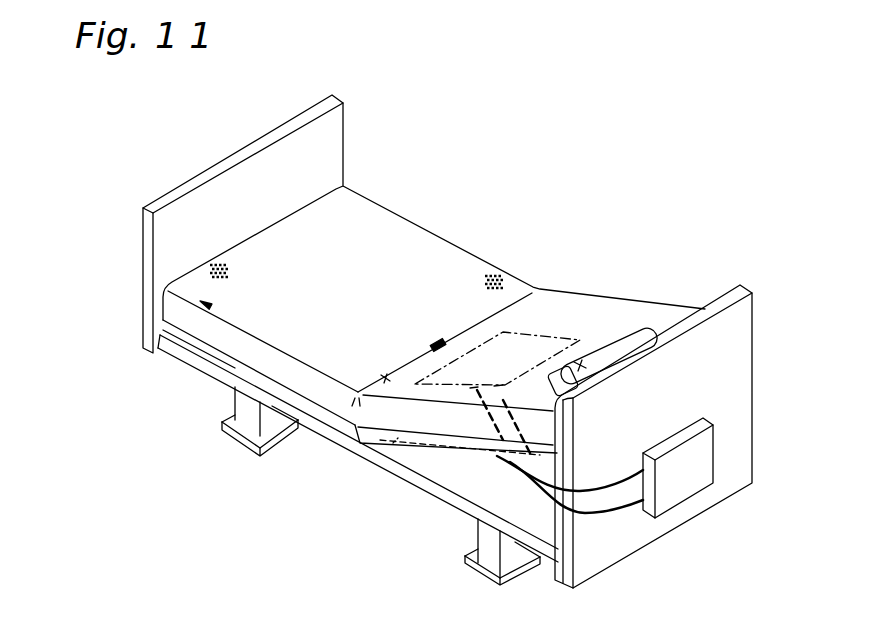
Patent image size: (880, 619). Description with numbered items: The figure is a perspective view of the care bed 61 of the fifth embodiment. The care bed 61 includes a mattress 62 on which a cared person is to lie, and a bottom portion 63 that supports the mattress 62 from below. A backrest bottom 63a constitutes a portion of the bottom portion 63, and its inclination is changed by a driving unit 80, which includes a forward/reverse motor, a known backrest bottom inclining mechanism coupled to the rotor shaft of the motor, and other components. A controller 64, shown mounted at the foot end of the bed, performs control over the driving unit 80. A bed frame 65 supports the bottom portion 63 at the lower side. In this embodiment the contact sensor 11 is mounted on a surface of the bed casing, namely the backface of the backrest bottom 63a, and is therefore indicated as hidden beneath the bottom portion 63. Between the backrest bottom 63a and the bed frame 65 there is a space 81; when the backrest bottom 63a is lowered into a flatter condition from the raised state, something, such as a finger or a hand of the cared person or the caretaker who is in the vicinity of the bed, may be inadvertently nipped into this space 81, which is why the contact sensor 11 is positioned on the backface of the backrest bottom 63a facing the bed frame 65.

The care bed 61 is at (197, 103).
The mattress 62 is at (348, 198).
The bottom portion 63 is at (185, 340).
The backrest bottom 63a is at (428, 441).
The controller 64 is at (683, 487).
The bed frame 65 is at (341, 436).
The driving unit 80 is at (507, 352).
The space 81 is at (480, 487).
The contact sensor 11 is at (393, 443).